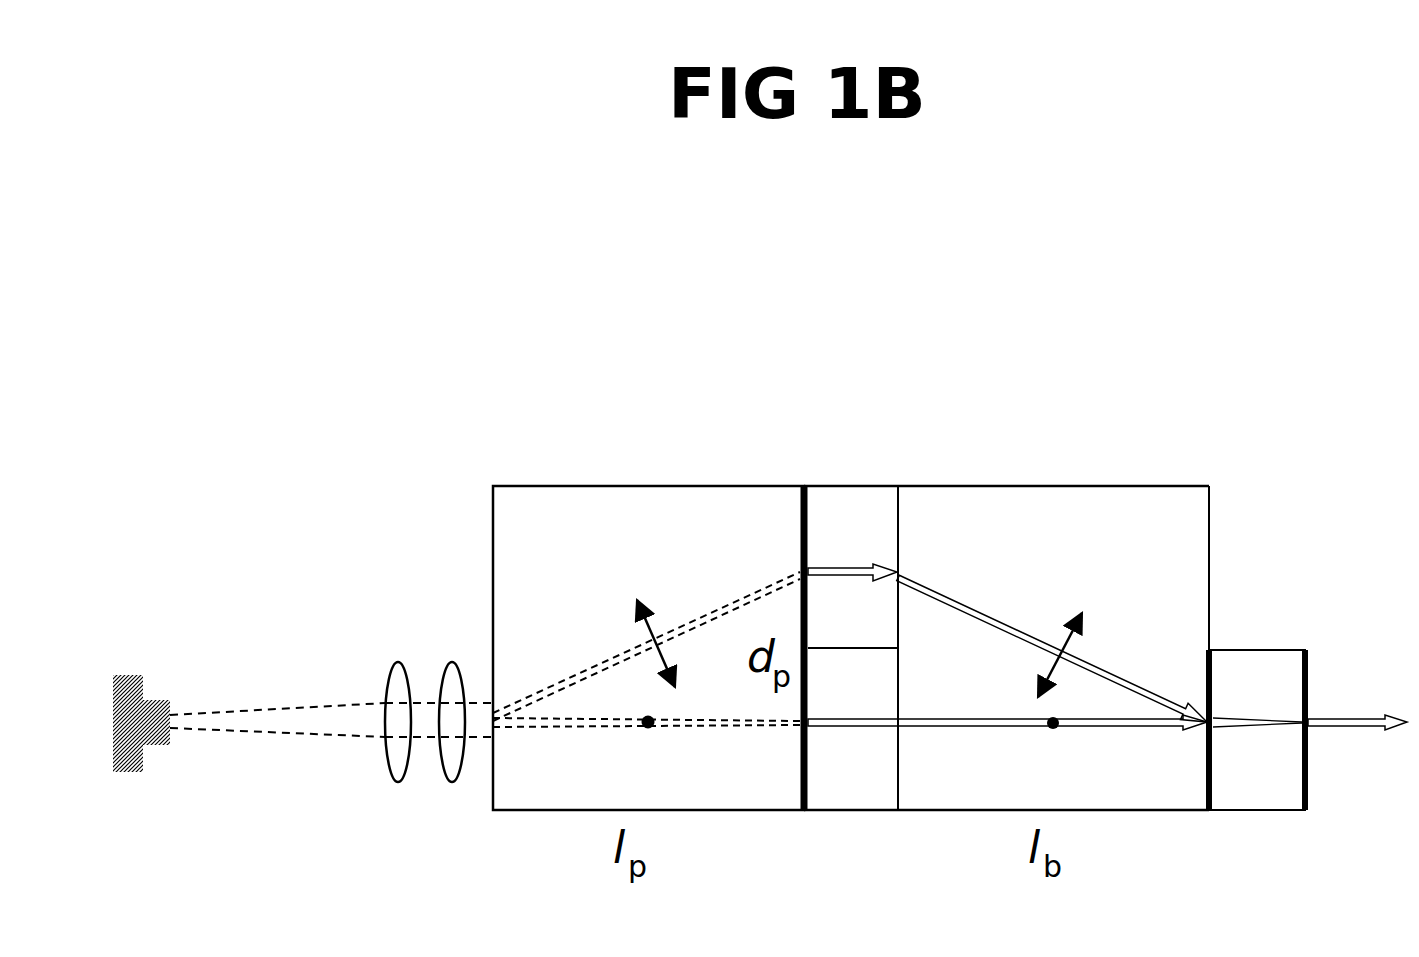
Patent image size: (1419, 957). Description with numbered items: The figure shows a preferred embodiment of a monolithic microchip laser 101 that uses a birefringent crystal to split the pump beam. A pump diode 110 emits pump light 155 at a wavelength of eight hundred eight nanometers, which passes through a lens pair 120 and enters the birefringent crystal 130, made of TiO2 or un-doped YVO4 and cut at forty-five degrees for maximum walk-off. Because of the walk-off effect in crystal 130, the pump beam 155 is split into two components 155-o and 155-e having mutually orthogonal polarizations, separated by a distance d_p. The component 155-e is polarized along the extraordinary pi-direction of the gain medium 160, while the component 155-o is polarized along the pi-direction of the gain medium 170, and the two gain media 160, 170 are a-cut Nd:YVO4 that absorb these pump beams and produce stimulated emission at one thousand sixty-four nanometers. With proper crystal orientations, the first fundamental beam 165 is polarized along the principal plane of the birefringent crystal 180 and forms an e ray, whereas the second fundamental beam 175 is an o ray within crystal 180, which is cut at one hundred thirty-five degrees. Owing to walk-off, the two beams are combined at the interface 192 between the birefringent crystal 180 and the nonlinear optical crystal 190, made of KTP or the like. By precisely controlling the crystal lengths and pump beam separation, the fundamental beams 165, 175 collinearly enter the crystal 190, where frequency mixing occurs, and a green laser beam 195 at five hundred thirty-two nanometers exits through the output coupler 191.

The microchip 101 is at (1109, 316).
The pump diode 110 is at (154, 692).
The lens assembly 120 is at (421, 752).
The birefringent crystal 130 is at (648, 648).
The pump light 155 is at (331, 704).
The pump beam component 155-e is at (782, 500).
The pump beam component 155-o is at (646, 747).
The gain medium 160 is at (853, 648).
The gain medium 170 is at (859, 687).
The second fundamental beam 175 is at (1007, 745).
The birefringent crystal 180 is at (1006, 648).
The first fundamental beam 165 is at (910, 495).
The nonlinear optical crystal 190 is at (1257, 730).
The output coupler 191 is at (1319, 755).
The interface 192 is at (1217, 755).
The green laser beam 195 is at (1357, 699).